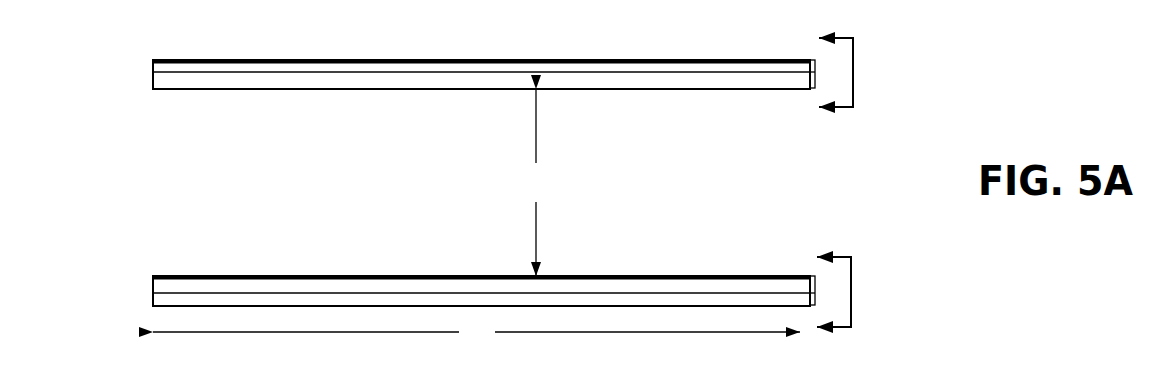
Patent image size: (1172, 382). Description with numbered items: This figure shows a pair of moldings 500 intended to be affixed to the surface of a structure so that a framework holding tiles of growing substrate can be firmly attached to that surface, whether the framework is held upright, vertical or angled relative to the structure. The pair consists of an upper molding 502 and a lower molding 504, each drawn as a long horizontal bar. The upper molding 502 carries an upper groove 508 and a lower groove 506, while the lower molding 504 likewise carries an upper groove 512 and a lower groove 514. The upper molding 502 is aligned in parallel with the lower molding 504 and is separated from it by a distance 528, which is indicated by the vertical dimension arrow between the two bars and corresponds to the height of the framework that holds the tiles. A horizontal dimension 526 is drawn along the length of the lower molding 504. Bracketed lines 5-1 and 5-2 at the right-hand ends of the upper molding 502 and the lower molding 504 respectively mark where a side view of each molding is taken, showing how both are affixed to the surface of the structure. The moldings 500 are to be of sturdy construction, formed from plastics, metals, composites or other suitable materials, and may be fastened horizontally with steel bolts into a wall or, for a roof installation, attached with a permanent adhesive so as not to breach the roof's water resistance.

The moldings 500 is at (922, 138).
The upper molding 502 is at (304, 90).
The lower molding 504 is at (382, 275).
The lower groove 506 is at (140, 81).
The upper groove 508 is at (140, 66).
The upper groove 512 is at (140, 286).
The lower groove 514 is at (140, 303).
The plate width 526 is at (476, 331).
The distance 528 is at (535, 182).
The line 5-1 is at (860, 72).
The line 5-2 is at (852, 292).